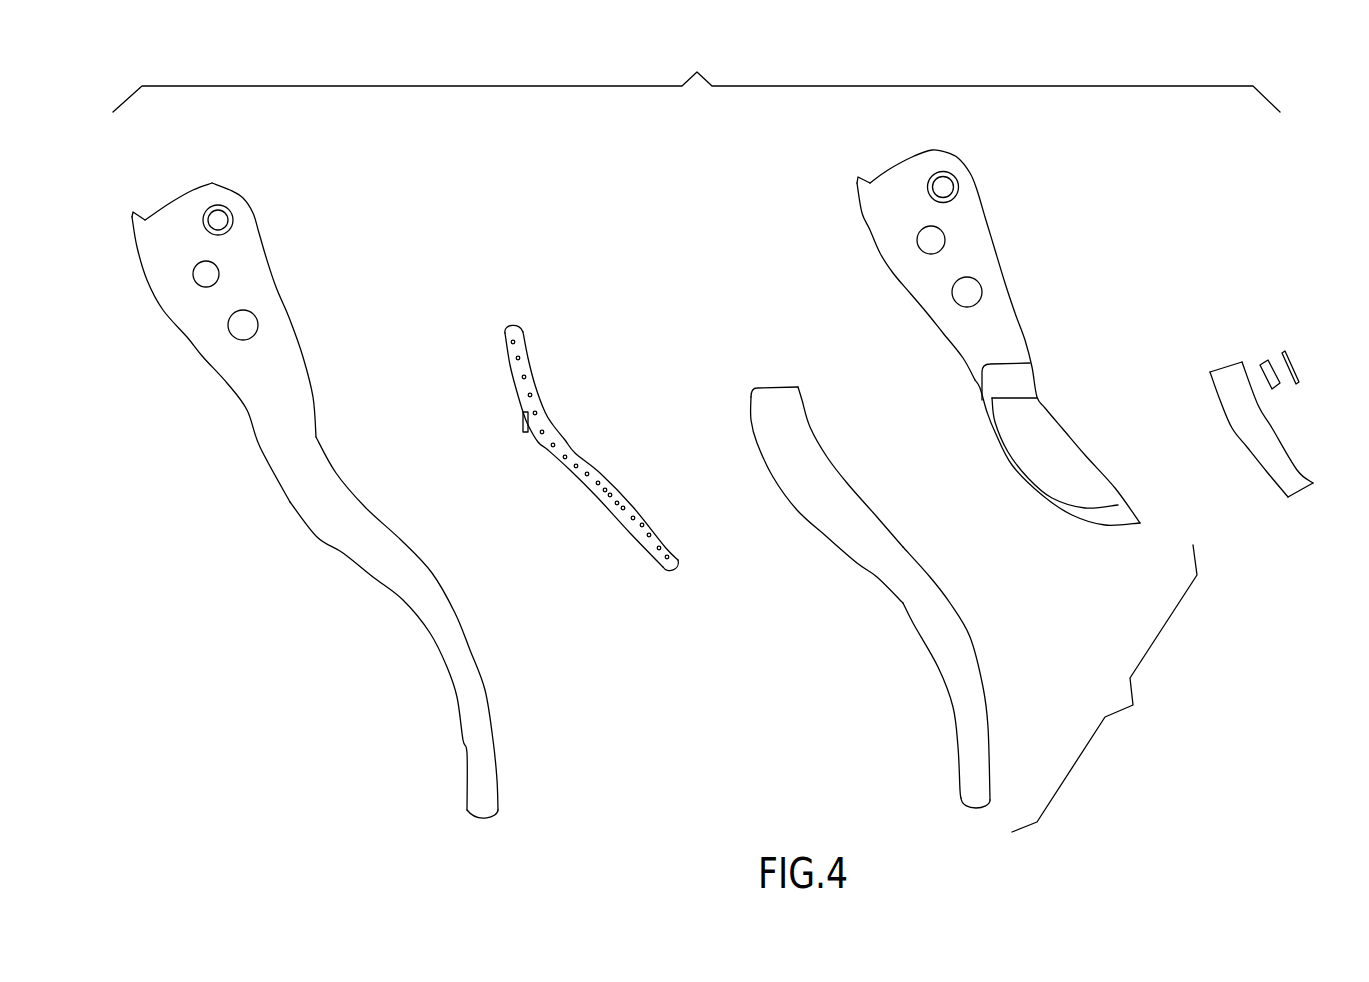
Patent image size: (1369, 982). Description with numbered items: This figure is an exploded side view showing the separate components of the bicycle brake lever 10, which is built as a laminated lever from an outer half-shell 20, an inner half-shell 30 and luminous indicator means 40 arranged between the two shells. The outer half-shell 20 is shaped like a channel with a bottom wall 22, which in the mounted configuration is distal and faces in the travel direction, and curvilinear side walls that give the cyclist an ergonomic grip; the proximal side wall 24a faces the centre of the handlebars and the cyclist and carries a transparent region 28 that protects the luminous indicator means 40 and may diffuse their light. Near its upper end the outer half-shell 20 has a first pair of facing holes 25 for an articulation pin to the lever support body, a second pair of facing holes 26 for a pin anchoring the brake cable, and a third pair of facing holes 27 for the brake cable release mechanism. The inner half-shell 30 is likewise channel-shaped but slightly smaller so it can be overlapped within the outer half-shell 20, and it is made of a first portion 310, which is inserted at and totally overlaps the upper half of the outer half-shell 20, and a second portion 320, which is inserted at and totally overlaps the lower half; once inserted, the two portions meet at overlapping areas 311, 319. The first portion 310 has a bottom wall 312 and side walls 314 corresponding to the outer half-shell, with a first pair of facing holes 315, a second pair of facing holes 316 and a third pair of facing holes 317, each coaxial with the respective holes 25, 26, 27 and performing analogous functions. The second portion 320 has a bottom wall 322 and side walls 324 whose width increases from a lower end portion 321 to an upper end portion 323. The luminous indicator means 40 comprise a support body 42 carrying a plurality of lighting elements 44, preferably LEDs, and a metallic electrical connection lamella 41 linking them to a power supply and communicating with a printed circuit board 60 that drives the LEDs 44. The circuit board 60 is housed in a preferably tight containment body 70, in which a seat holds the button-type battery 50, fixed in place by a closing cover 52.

The brake lever 10 is at (696, 78).
The outer half-shell 20 is at (315, 479).
The bottom wall 22 is at (290, 502).
The proximal side wall 24a is at (288, 393).
The first pair of facing holes 25 is at (253, 325).
The second pair of facing holes 26 is at (235, 219).
The third pair of facing holes 27 is at (200, 276).
The transparent region 28 is at (337, 492).
The inner half-shell 30 is at (1104, 688).
The luminous indicator means 40 is at (560, 464).
The metallic electrical connection lamella 41 is at (527, 427).
The support body 42 is at (580, 457).
The lighting elements 44 is at (513, 342).
The battery 50 is at (1265, 362).
The closing cover 52 is at (1293, 364).
The printed circuit board 60 is at (1265, 477).
The containment body 70 is at (1286, 469).
The first portion 310 is at (955, 321).
The overlapping area 311 is at (1000, 443).
The bottom wall 312 is at (862, 208).
The side walls 314 is at (1030, 339).
The first pair of facing holes 315 is at (966, 295).
The second pair of facing holes 316 is at (940, 184).
The third pair of facing holes 317 is at (931, 241).
The overlapping area 319 is at (848, 483).
The second portion 320 is at (880, 570).
The lower end portion 321 is at (993, 770).
The bottom wall 322 is at (877, 575).
The upper end portion 323 is at (749, 413).
The side walls 324 is at (950, 627).